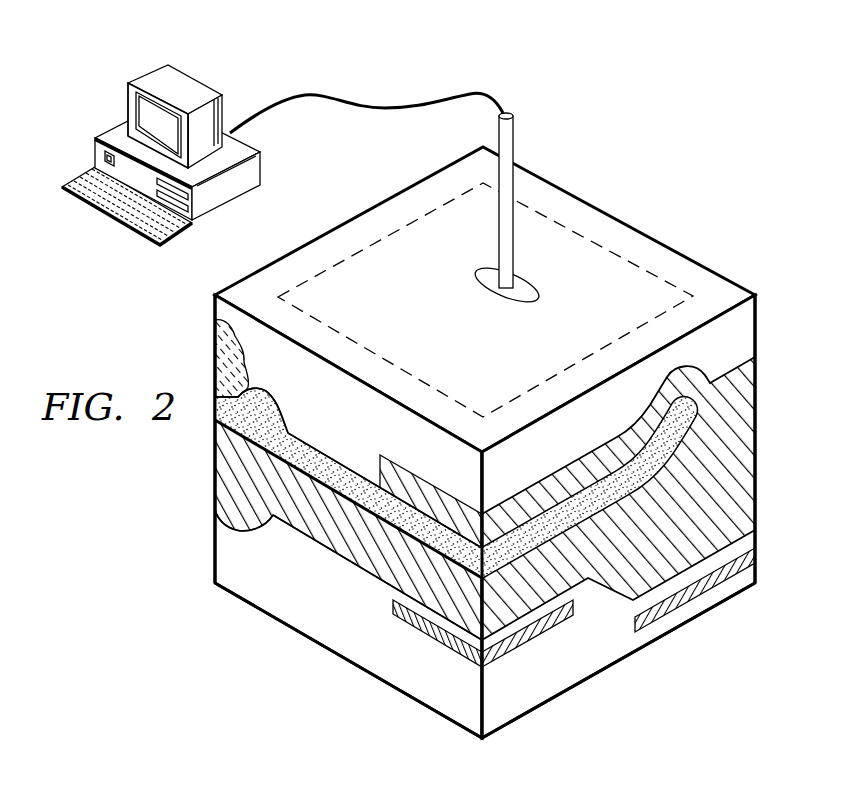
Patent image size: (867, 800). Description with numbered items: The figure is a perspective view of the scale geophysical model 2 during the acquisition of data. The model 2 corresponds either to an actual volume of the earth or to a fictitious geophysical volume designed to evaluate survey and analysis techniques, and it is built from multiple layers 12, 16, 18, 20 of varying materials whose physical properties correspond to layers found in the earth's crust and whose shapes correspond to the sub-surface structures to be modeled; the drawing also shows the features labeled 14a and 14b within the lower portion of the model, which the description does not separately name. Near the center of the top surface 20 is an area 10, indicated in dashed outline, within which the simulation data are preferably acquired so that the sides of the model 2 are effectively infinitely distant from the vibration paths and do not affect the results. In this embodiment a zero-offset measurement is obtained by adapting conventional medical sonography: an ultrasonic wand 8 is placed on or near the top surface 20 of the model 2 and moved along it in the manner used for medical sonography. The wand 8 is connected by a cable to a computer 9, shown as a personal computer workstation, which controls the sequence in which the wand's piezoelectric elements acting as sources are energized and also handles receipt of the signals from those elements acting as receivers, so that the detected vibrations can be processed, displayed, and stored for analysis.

The scale geophysical model 2 is at (762, 303).
The ultrasonic wand 8 is at (499, 214).
The computer 9 is at (155, 80).
The area 10 is at (653, 271).
The layer 12 is at (602, 650).
The electrode 14a is at (722, 578).
The electrode 14b is at (538, 632).
The layer 16 is at (734, 498).
The layer 18 is at (622, 497).
The top surface 20 is at (568, 454).